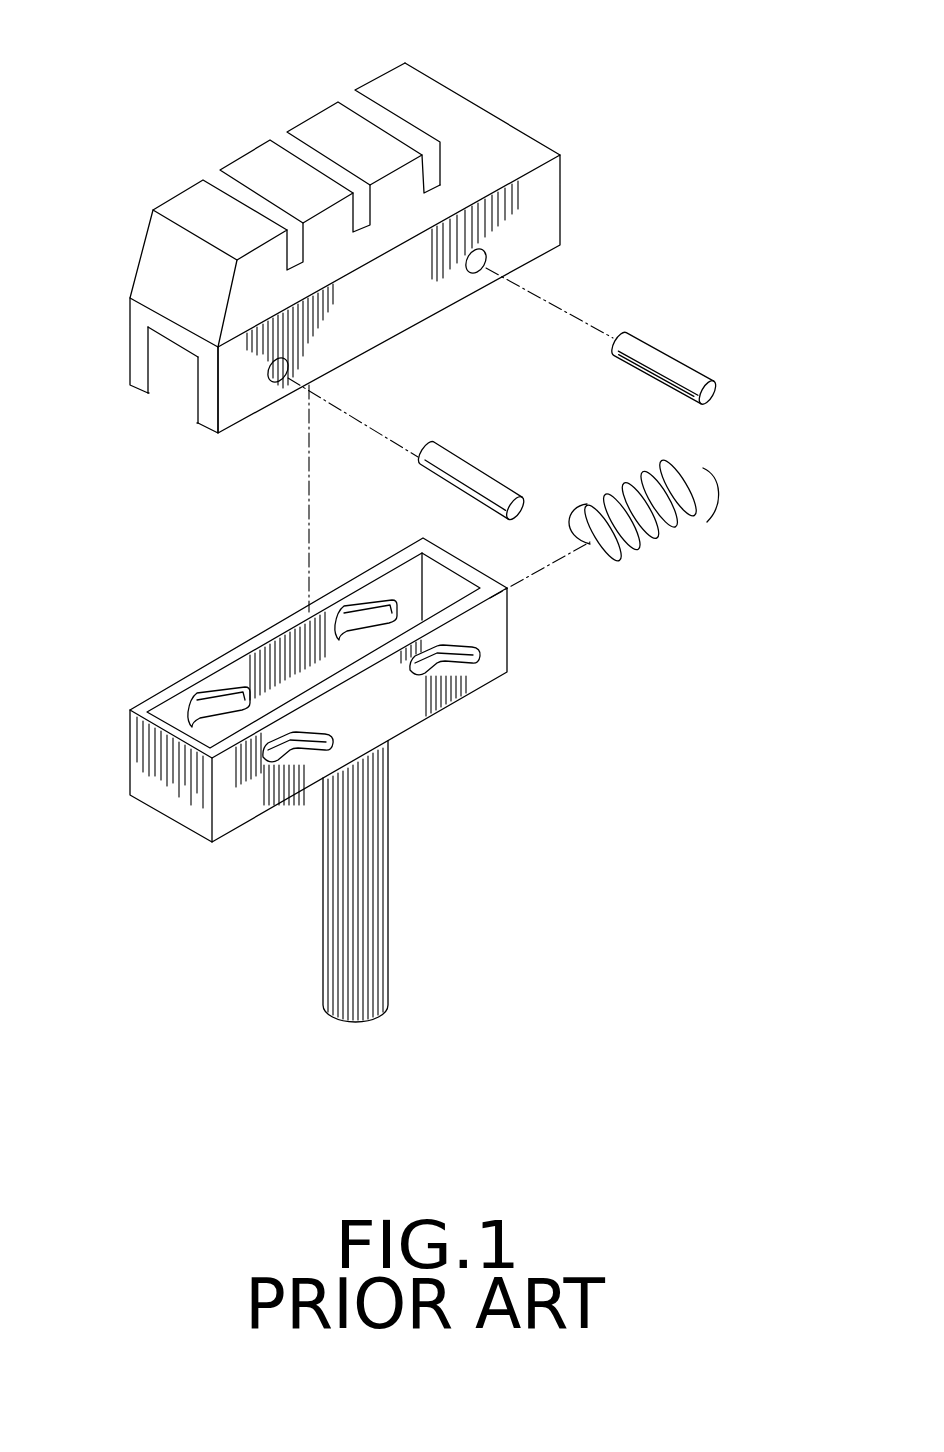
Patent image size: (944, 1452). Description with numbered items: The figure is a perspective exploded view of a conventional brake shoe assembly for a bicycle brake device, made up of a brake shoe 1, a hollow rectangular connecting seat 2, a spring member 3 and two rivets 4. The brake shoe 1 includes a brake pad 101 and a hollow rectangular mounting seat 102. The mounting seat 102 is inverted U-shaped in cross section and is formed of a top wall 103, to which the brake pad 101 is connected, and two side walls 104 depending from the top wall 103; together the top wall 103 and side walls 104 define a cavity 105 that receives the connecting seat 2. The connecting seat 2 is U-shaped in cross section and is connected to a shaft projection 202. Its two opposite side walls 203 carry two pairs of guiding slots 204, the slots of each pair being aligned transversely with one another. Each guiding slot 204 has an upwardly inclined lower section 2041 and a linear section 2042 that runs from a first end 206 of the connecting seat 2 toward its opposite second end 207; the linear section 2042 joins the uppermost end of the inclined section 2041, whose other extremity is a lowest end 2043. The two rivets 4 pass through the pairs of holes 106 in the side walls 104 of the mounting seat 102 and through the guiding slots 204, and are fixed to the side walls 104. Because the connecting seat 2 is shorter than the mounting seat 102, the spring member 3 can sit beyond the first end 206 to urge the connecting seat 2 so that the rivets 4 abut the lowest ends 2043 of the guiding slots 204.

The brake shoe 1 is at (507, 117).
The brake pad 101 is at (418, 88).
The mounting seat 102 is at (552, 193).
The top wall 103 is at (165, 330).
The side walls 104 is at (137, 330).
The cavity 105 is at (177, 383).
The holes 106 is at (278, 385).
The connecting seat 2 is at (390, 868).
The shaft projection 202 is at (388, 978).
The side walls 203 is at (480, 677).
The guiding slots 204 is at (280, 768).
The upwardly inclined lower section 2041 is at (480, 663).
The linear section 2042 is at (433, 673).
The lowest end 2043 is at (318, 767).
The first end 206 is at (403, 574).
The second end 207 is at (155, 787).
The spring member 3 is at (690, 523).
The rivets 4 is at (495, 483).